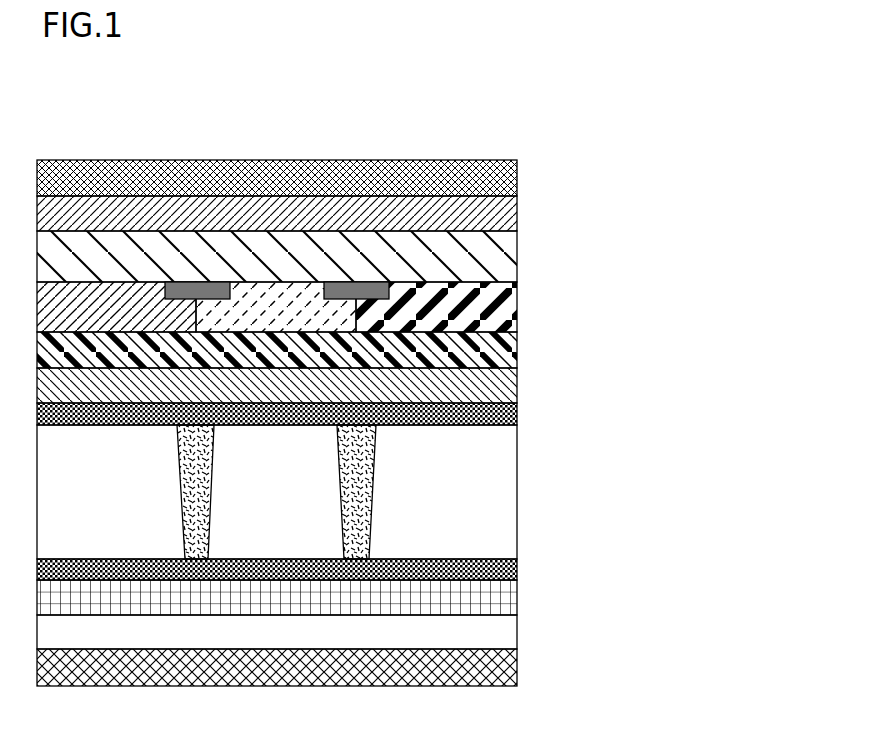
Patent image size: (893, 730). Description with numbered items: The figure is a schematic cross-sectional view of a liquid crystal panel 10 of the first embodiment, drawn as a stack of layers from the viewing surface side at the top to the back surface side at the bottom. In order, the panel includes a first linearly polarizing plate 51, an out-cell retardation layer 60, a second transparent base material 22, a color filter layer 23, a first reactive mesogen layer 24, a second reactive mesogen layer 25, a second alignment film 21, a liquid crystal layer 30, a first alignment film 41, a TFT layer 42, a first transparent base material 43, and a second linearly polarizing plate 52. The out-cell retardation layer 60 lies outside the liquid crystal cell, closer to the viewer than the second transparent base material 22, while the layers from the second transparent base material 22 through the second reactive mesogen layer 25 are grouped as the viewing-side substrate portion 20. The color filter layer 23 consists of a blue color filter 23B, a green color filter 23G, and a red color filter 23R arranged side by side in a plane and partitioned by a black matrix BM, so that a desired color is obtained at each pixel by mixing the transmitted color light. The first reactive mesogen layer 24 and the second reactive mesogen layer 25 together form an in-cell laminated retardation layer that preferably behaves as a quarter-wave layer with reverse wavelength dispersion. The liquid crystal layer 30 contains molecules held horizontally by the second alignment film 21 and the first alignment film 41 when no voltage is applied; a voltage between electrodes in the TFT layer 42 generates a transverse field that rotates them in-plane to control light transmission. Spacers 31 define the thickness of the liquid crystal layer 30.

The display device 10 is at (545, 141).
The first linearly polarizing plate 51 is at (515, 177).
The out-cell retardation layer 60 is at (515, 213).
The second transparent base material 22 is at (500, 260).
The color filter layer 23 is at (277, 192).
The blue color filter 23B is at (111, 318).
The green color filter 23G is at (316, 317).
The red color filter 23R is at (440, 318).
The black matrix BM is at (277, 202).
The color filter substrate 20 is at (342, 228).
The first reactive mesogen layer 24 is at (513, 350).
The second reactive mesogen layer 25 is at (312, 385).
The second alignment film 21 is at (513, 415).
The liquid crystal layer 30 is at (312, 492).
The spacer 31 is at (360, 487).
The first alignment film 41 is at (513, 568).
The TFT layer 42 is at (513, 597).
The first transparent base material 43 is at (503, 633).
The second linearly polarizing plate 52 is at (513, 668).